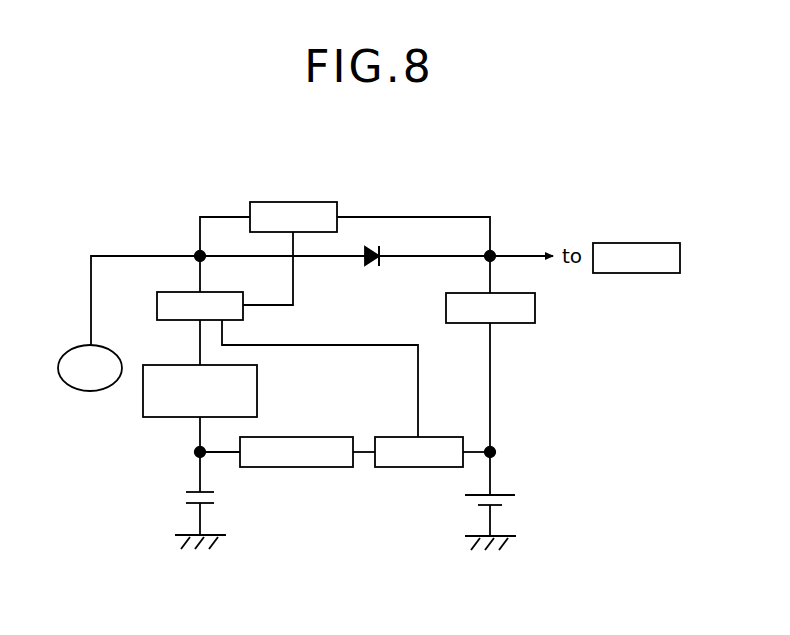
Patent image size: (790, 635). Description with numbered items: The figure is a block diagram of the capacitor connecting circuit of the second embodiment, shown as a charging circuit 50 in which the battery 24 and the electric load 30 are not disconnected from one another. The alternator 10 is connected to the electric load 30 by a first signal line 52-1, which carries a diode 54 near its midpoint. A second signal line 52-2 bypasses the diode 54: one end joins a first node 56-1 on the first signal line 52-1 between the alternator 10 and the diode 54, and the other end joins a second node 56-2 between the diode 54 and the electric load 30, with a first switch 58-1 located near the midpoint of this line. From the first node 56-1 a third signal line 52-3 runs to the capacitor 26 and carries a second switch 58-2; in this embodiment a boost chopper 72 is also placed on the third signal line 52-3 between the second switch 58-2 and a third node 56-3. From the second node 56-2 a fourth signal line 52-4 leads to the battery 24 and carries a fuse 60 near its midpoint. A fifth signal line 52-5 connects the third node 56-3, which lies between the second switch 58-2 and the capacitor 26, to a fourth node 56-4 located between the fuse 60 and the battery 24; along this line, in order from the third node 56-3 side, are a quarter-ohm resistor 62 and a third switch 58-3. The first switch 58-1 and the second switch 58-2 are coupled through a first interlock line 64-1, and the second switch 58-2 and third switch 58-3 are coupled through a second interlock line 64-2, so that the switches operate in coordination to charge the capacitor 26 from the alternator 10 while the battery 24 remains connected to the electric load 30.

The alternator 10 is at (78, 347).
The battery 24 is at (468, 500).
The capacitor 26 is at (183, 497).
The electric load 30 is at (639, 243).
The charging circuit 50 is at (448, 178).
The first signal line 52-1 is at (126, 252).
The second signal line 52-2 is at (225, 214).
The third signal line 52-3 is at (196, 345).
The fourth signal line 52-4 is at (497, 397).
The fifth signal line 52-5 is at (230, 459).
The diode 54 is at (373, 250).
The first node 56-1 is at (196, 251).
The second node 56-2 is at (498, 252).
The third node 56-3 is at (193, 452).
The fourth node 56-4 is at (498, 458).
The first switch 58-1 is at (297, 202).
The second switch 58-2 is at (157, 304).
The third switch 58-3 is at (416, 468).
The fuse 60 is at (535, 305).
The resistor 62 is at (313, 468).
The first interlock line 64-1 is at (298, 293).
The second interlock line 64-2 is at (320, 340).
The boost chopper 72 is at (257, 388).